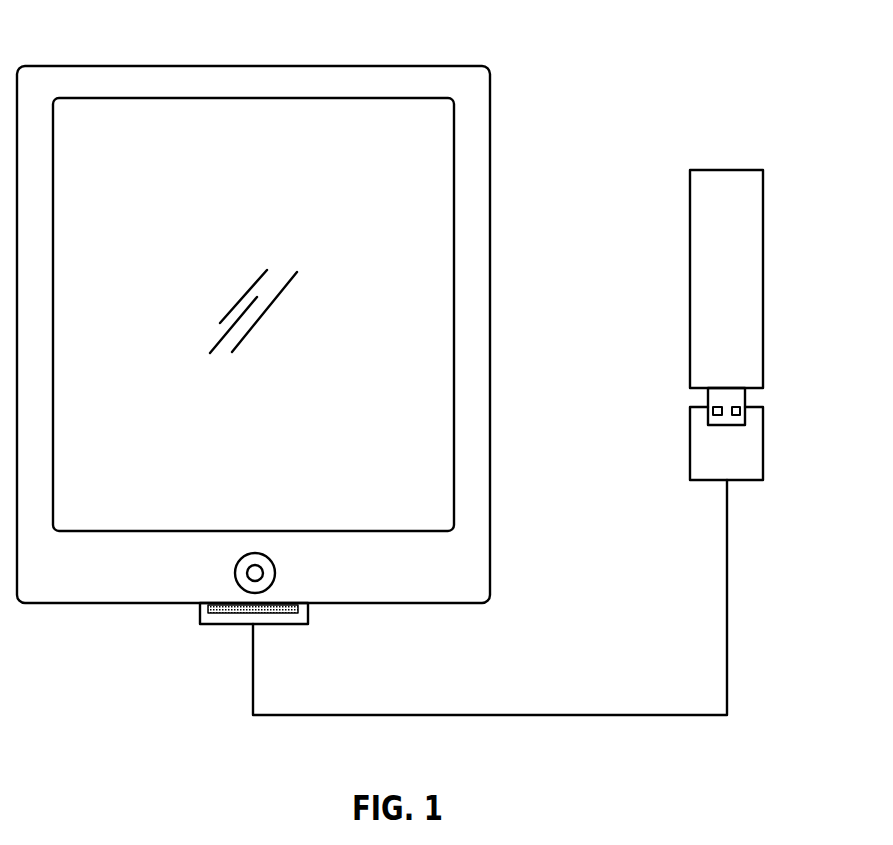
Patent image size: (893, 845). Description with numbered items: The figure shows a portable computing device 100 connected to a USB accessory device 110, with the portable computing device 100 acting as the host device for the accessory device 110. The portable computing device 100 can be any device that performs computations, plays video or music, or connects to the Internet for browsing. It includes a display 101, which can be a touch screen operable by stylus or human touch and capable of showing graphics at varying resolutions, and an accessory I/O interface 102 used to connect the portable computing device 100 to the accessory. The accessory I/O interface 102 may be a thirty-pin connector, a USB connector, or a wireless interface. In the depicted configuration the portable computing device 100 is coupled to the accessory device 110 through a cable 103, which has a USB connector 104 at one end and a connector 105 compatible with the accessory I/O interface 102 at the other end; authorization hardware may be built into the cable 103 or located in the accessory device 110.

The portable computing device 100 is at (252, 66).
The display 101 is at (415, 207).
The accessory I/O interface 102 is at (236, 603).
The cable 103 is at (728, 607).
The USB connector 104 is at (765, 442).
The connector 105 is at (288, 627).
The USB accessory device 110 is at (725, 170).